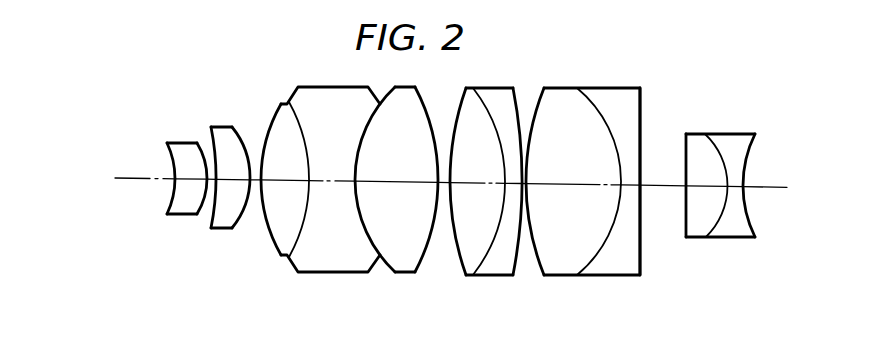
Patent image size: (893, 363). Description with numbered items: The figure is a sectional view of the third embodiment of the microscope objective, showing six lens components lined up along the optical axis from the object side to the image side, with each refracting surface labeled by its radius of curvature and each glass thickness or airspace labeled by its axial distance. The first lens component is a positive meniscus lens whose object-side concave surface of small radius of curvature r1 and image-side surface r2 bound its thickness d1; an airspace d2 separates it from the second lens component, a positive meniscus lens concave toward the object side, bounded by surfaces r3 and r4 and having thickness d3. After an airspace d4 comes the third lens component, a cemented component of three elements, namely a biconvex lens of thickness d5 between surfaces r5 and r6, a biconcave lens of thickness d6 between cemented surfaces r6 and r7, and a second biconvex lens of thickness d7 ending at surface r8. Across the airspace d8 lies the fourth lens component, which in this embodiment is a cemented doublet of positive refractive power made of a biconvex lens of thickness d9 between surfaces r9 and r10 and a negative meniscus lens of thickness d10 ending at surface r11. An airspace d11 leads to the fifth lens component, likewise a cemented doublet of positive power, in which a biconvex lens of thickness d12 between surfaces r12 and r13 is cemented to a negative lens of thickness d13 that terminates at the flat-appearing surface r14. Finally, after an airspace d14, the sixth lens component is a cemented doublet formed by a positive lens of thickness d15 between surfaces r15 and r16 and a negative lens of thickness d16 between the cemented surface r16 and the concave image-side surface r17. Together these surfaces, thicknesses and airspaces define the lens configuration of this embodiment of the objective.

The radius of curvature of lens surface r1 is at (170, 192).
The radius of curvature of lens surface r2 is at (200, 216).
The radius of curvature of lens surface r3 is at (205, 227).
The radius of curvature of lens surface r4 is at (236, 229).
The radius of curvature of lens surface r5 is at (269, 243).
The radius of curvature of lens surface r6 is at (290, 248).
The radius of curvature of lens surface r7 is at (379, 258).
The radius of curvature of lens surface r8 is at (416, 273).
The radius of curvature of lens surface r9 is at (459, 271).
The radius of curvature of lens surface r10 is at (481, 270).
The radius of curvature of lens surface r11 is at (518, 275).
The radius of curvature of lens surface r12 is at (542, 277).
The radius of curvature of lens surface r13 is at (590, 274).
The radius of curvature of lens surface r14 is at (642, 274).
The radius of curvature of lens surface r15 is at (685, 223).
The radius of curvature of lens surface r16 is at (721, 222).
The radius of curvature of lens surface r17 is at (752, 221).
The lens thickness d1 is at (167, 148).
The airspace d2 is at (208, 142).
The lens thickness d3 is at (233, 173).
The airspace d4 is at (252, 158).
The lens thickness d5 is at (282, 176).
The lens thickness d6 is at (325, 180).
The lens thickness d7 is at (392, 180).
The airspace d8 is at (445, 180).
The lens thickness d9 is at (473, 180).
The lens thickness d10 is at (507, 182).
The airspace d11 is at (527, 181).
The lens thickness d12 is at (587, 181).
The lens thickness d13 is at (628, 181).
The airspace d14 is at (662, 181).
The lens thickness d15 is at (698, 182).
The lens thickness d16 is at (739, 186).